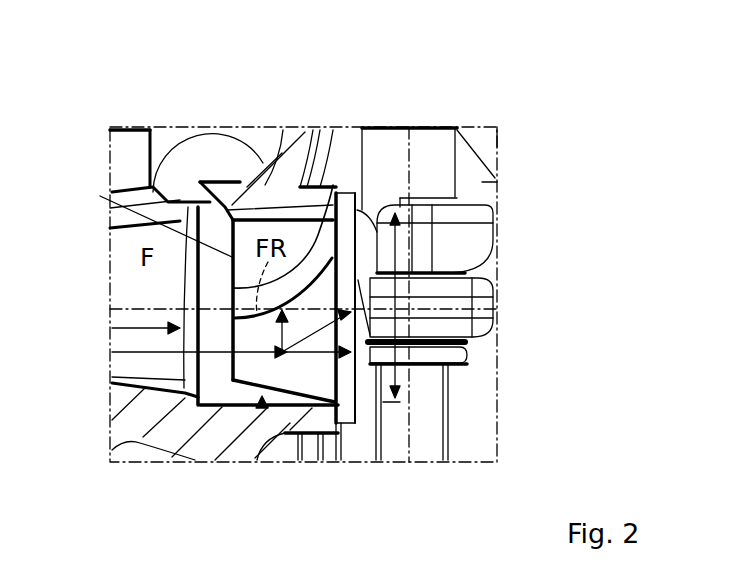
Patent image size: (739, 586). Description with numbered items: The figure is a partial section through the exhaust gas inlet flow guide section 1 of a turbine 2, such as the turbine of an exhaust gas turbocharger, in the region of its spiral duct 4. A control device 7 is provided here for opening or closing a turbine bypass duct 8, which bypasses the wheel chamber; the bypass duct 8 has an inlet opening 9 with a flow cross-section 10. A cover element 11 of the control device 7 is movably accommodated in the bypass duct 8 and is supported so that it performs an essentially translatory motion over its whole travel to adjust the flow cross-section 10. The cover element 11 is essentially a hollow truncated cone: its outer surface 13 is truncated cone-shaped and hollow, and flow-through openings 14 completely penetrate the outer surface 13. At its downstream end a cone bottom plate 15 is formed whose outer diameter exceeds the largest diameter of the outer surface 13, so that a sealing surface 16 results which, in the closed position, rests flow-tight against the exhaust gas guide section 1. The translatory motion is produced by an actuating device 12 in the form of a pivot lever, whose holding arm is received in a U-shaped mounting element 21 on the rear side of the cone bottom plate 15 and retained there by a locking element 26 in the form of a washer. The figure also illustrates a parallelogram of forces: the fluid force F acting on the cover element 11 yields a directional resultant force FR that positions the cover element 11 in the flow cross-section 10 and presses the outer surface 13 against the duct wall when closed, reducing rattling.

The exhaust gas inlet flow guide section 1 is at (207, 142).
The turbine 2 is at (546, 163).
The spiral duct 4 is at (293, 127).
The control device 7 is at (510, 233).
The turbine bypass duct 8 is at (228, 390).
The inlet opening 9 is at (355, 388).
The flow cross-section 10 is at (395, 307).
The cover element 11 is at (259, 440).
The actuating device 12 is at (422, 127).
The outer surface 13 is at (321, 420).
The flow-through openings 14 is at (112, 183).
The cone bottom plate 15 is at (357, 130).
The sealing surface 16 is at (331, 135).
The mounting element 21 is at (493, 307).
The locking element 26 is at (452, 350).